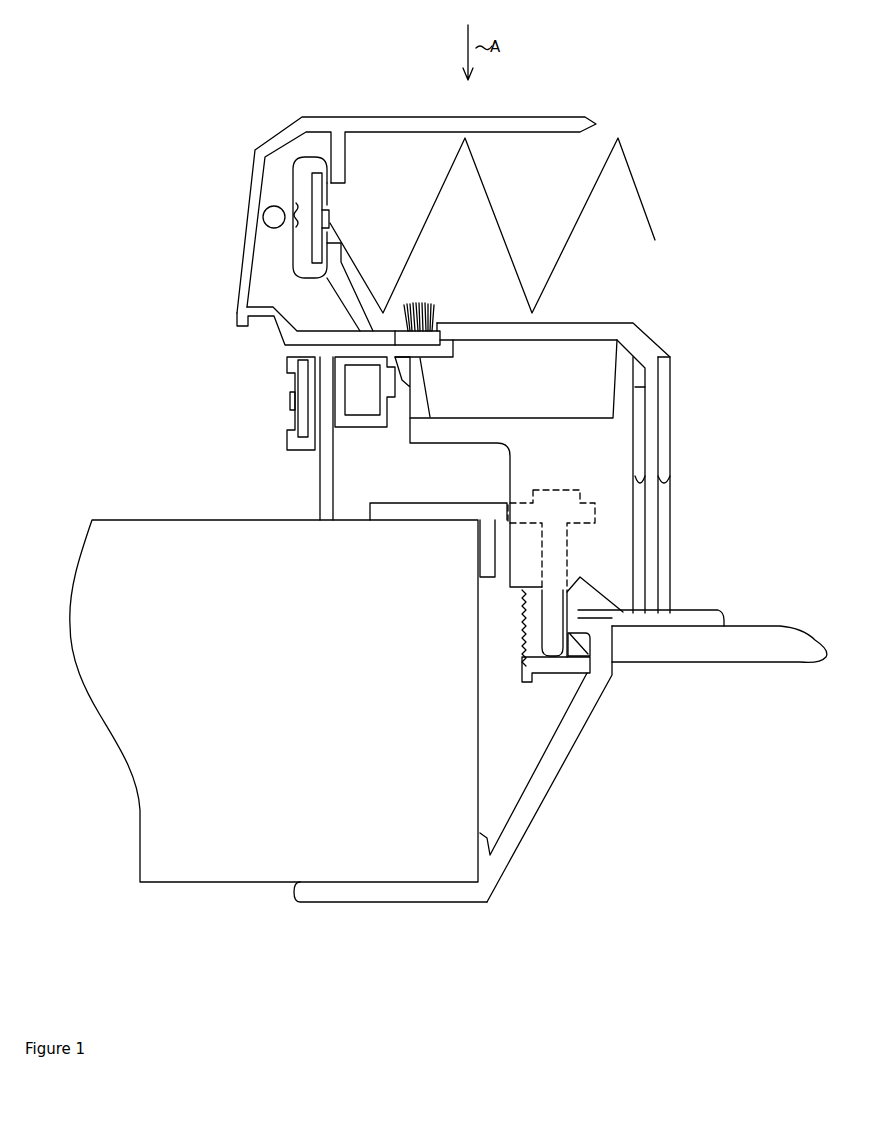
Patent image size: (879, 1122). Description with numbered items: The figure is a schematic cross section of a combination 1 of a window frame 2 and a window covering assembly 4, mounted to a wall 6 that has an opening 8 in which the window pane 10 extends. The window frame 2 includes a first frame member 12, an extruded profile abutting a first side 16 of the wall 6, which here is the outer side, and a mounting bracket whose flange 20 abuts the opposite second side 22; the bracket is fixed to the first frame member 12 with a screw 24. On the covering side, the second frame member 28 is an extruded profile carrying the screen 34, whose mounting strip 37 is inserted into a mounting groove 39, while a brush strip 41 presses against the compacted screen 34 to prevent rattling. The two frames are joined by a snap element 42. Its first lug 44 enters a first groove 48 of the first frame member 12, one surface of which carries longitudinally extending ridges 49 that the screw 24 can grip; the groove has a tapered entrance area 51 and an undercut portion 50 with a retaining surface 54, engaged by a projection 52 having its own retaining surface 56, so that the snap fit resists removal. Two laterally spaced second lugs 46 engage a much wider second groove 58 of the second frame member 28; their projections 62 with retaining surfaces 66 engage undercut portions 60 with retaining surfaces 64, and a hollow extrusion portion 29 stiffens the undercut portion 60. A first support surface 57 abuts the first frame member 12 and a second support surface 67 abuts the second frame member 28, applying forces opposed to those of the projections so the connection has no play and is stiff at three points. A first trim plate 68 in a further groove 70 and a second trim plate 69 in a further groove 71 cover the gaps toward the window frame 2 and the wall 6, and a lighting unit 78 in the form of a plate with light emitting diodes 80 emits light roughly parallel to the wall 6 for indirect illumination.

The combination 1 is at (822, 52).
The window frame 2 is at (636, 883).
The window covering assembly 4 is at (772, 238).
The wall 6 is at (180, 885).
The opening 8 is at (800, 796).
The window pane 10 is at (763, 633).
The first frame member 12 is at (512, 833).
The first side 16 is at (245, 886).
The flange 20 is at (367, 512).
The second side 22 is at (130, 518).
The screw 24 is at (550, 543).
The second frame member 28 is at (532, 118).
The hollow extrusion portion 29 is at (365, 413).
The screen 34 is at (573, 240).
The mounting strip 37 is at (318, 177).
The mounting groove 39 is at (307, 172).
The brush strip 41 is at (427, 302).
The snap element 42 is at (517, 478).
The first lug 44 is at (555, 658).
The second lugs 46 is at (417, 385).
The first groove 48 is at (540, 660).
The longitudinally extending ridges 49 is at (538, 633).
The undercut portion 50 is at (572, 662).
The tapered entrance area 51 is at (587, 577).
The projection 52 is at (573, 640).
The retaining surface 54 is at (573, 632).
The retaining surface 56 is at (570, 653).
The first support surface 57 is at (515, 590).
The second groove 58 is at (563, 360).
The undercut portions 60 is at (403, 382).
The projection 62 is at (637, 367).
The retaining surface 64 is at (417, 378).
The retaining surface 66 is at (437, 340).
The second support surface 67 is at (398, 362).
The first trim plate 68 is at (658, 512).
The second trim plate 69 is at (323, 480).
The further groove 70 is at (652, 447).
The further groove 71 is at (302, 363).
The lighting unit 78 is at (302, 382).
The light emitting diodes 80 is at (288, 403).